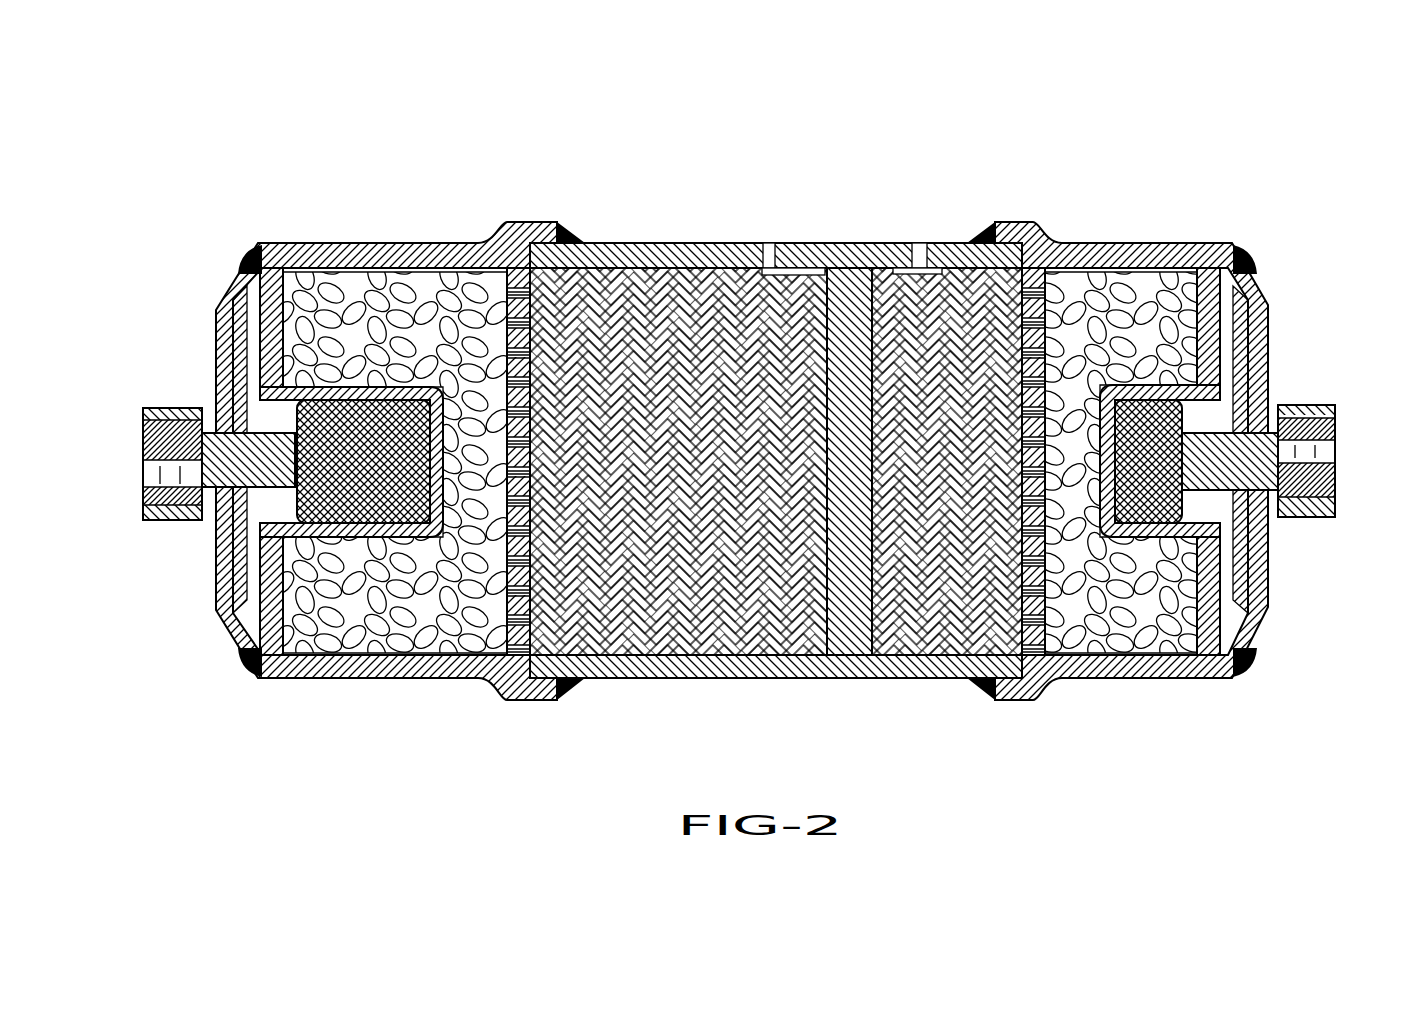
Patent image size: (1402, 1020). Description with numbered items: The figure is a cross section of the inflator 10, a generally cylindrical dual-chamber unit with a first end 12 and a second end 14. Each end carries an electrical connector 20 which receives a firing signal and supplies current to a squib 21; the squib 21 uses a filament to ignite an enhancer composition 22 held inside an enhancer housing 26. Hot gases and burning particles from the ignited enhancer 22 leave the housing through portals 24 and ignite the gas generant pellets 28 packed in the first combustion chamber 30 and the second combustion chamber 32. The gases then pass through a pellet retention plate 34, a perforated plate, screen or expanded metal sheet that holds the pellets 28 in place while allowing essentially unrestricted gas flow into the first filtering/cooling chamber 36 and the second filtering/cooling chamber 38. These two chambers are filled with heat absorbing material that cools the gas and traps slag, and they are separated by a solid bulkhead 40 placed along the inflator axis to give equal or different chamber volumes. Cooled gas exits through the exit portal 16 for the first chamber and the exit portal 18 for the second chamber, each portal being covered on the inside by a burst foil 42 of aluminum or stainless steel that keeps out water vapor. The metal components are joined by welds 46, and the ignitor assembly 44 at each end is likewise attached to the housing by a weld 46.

The inflator 10 is at (240, 179).
The first end 12 is at (188, 537).
The second end 14 is at (1286, 584).
The exit portal 16 is at (786, 263).
The exit portal 18 is at (921, 263).
The electrical connector 20 is at (142, 468).
The squib 21 is at (230, 440).
The enhancer composition 22 is at (323, 413).
The portal 24 is at (361, 528).
The enhancer housing 26 is at (398, 388).
The gas generant pellets 28 is at (431, 628).
The first combustion chamber 30 is at (347, 303).
The second combustion chamber 32 is at (1146, 295).
The pellet retention plate 34 is at (515, 270).
The first filtering/cooling chamber 36 is at (585, 627).
The second filtering/cooling chamber 38 is at (924, 620).
The bulkhead 40 is at (846, 635).
The foil 42 is at (768, 262).
The ignitor assembly 44 is at (1302, 384).
The weld 46 is at (246, 255).